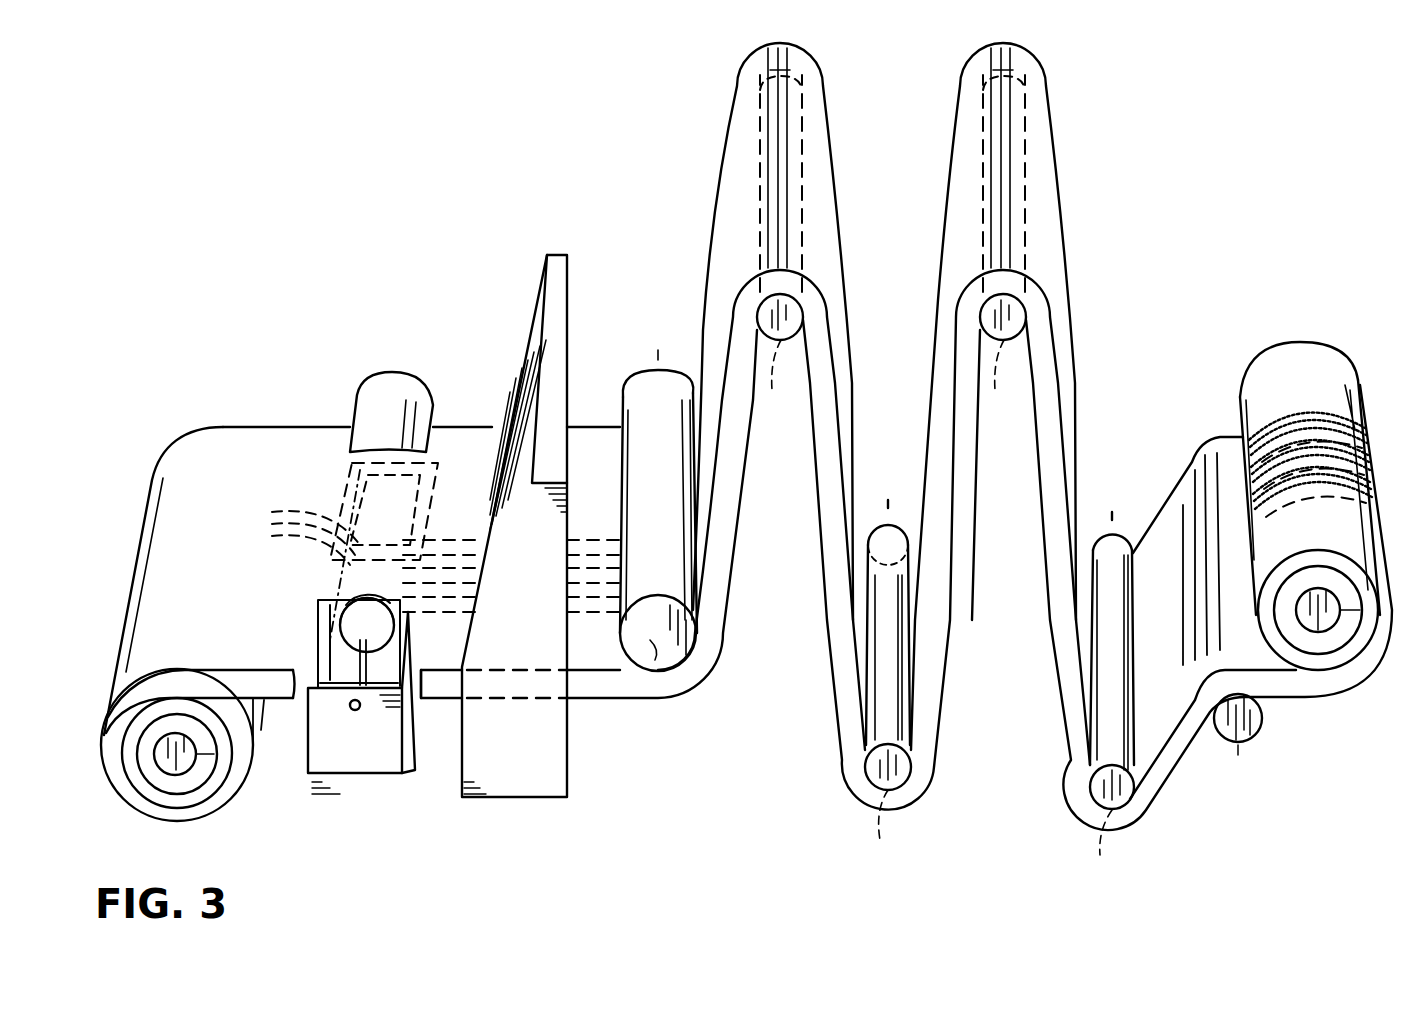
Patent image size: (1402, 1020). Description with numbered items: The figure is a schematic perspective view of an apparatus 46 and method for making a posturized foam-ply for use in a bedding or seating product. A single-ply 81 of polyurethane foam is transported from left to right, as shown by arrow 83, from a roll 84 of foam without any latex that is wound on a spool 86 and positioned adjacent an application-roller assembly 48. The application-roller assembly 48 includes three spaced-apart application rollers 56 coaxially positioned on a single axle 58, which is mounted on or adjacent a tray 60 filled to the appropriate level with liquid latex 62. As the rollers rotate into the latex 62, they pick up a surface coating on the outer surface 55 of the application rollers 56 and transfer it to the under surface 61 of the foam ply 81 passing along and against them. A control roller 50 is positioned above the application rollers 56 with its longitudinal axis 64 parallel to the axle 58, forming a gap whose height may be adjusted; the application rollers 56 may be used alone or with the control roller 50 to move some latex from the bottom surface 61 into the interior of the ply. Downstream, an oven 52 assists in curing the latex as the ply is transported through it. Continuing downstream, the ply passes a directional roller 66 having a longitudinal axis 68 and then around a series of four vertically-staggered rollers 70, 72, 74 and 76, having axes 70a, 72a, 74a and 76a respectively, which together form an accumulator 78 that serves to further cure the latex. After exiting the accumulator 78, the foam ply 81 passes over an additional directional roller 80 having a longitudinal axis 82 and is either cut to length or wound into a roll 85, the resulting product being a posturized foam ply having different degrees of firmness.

The apparatus 46 is at (370, 250).
The application-roller assembly 48 is at (430, 350).
The control roller 50 is at (386, 385).
The oven 52 is at (553, 253).
The outer surface 55 is at (330, 612).
The application rollers 56 is at (429, 560).
The axle 58 is at (358, 711).
The tray 60 is at (312, 740).
The under surface 61 is at (432, 702).
The liquid latex 62 is at (340, 655).
The longitudinal axis 64 is at (395, 372).
The directional roller 66 is at (643, 388).
The longitudinal axis 68 is at (645, 668).
The roller 70 is at (805, 312).
The axis 70a is at (774, 378).
The roller 72 is at (860, 752).
The axis 72a is at (880, 828).
The roller 74 is at (1028, 312).
The axis 74a is at (996, 378).
The roller 76 is at (1085, 768).
The axis 76a is at (1102, 846).
The accumulator 78 is at (1084, 112).
The directional roller 80 is at (1262, 728).
The single-ply of polyurethane foam 81 is at (472, 427).
The longitudinal axis 82 is at (1240, 750).
The arrow 83 is at (283, 403).
The roll 84 is at (190, 820).
The roll 85 is at (1303, 360).
The spool 86 is at (156, 757).